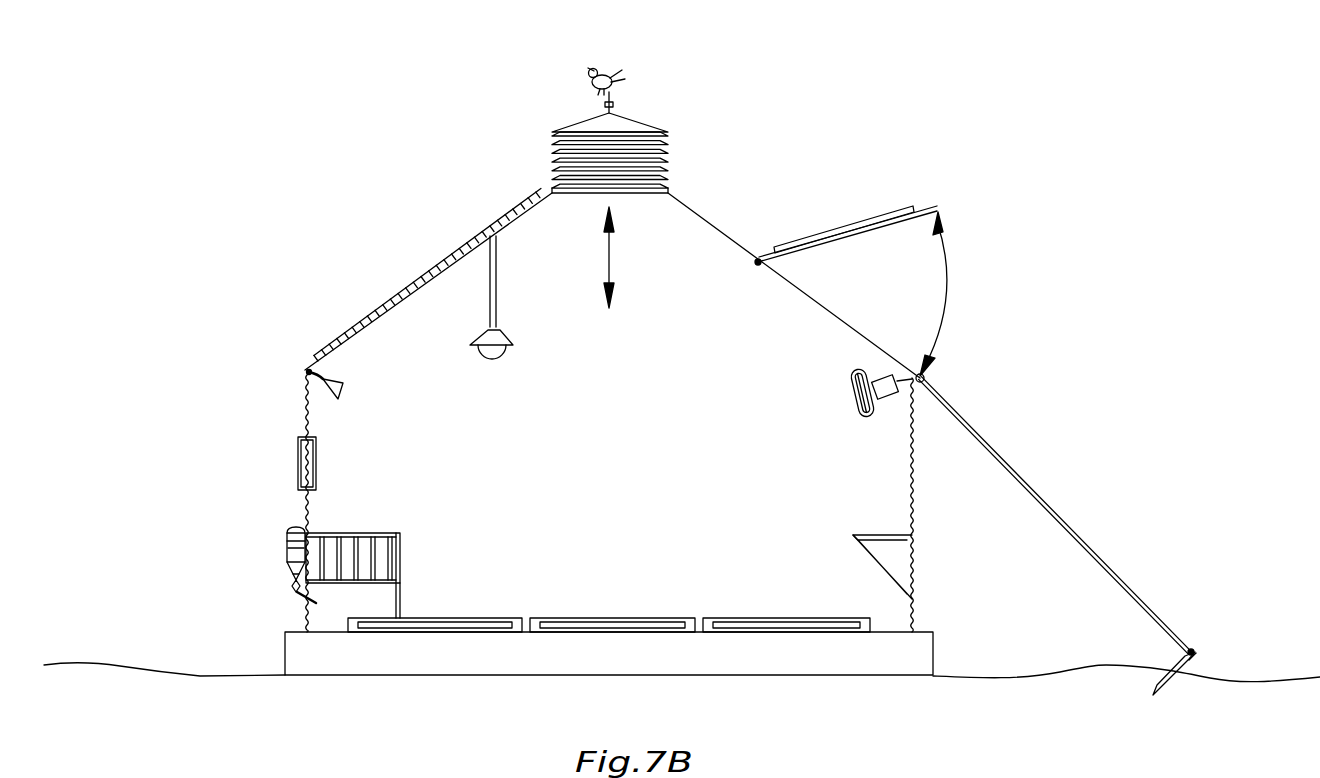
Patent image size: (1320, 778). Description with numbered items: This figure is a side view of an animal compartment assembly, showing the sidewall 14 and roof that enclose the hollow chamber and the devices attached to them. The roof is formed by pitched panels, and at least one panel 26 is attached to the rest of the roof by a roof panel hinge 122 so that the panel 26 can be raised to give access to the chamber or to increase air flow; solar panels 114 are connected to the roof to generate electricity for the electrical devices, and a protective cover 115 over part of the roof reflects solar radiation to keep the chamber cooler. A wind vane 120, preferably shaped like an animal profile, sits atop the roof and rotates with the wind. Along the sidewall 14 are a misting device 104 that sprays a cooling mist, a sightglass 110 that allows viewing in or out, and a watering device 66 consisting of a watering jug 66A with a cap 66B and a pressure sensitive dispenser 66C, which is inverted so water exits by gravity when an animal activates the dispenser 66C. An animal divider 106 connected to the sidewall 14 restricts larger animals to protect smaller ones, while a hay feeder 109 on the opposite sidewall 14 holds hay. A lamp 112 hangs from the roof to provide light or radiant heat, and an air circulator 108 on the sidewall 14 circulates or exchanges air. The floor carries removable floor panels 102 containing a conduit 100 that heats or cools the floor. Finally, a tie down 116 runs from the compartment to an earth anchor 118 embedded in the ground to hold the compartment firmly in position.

The sidewall 14 is at (303, 385).
The panel 26 is at (927, 210).
The watering device 66 is at (298, 532).
The watering jug 66A is at (287, 548).
The cap 66B is at (293, 581).
The pressure sensitive dispenser 66C is at (299, 594).
The conduit 100 is at (458, 633).
The removable floor panel 102 is at (495, 617).
The misting device 104 is at (332, 372).
The animal divider 106 is at (373, 532).
The air circulator 108 is at (849, 373).
The hay feeder 109 is at (852, 534).
The sightglass 110 is at (297, 450).
The lamp 112 is at (508, 360).
The solar panel 114 is at (832, 228).
The protective cover 115 is at (415, 264).
The tie down 116 is at (1042, 500).
The earth anchor 118 is at (1197, 652).
The wind vane 120 is at (590, 67).
The roof panel hinge 122 is at (755, 268).